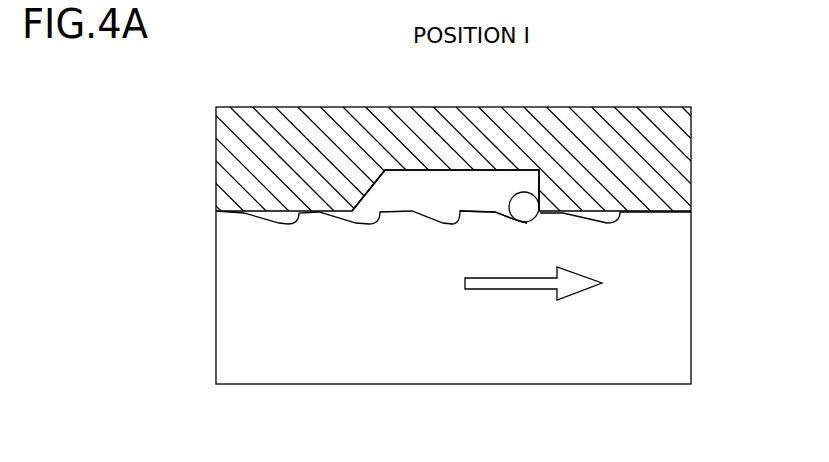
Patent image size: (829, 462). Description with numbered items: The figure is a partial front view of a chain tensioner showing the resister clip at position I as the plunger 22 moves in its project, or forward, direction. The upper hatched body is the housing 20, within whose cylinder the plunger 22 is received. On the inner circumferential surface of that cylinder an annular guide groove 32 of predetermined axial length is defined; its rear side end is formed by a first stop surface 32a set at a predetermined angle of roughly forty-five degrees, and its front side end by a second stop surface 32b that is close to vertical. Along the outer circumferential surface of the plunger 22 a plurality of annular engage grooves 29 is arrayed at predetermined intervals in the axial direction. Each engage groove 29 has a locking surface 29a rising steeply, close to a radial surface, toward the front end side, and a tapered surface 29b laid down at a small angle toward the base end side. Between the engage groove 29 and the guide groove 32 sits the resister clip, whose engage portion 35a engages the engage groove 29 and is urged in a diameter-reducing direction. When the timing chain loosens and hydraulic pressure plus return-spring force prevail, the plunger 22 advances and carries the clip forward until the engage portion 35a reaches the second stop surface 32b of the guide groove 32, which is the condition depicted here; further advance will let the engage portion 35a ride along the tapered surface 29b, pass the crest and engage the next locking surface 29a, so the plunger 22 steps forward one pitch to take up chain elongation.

The housing 20 is at (283, 119).
The plunger 22 is at (677, 251).
The engage groove 29 is at (417, 211).
The locking surface 29a is at (524, 222).
The tapered surface 29b is at (495, 211).
The guide groove 32 is at (443, 170).
The first stop surface 32a is at (378, 188).
The second stop surface 32b is at (540, 176).
The engage portion 35a is at (512, 197).